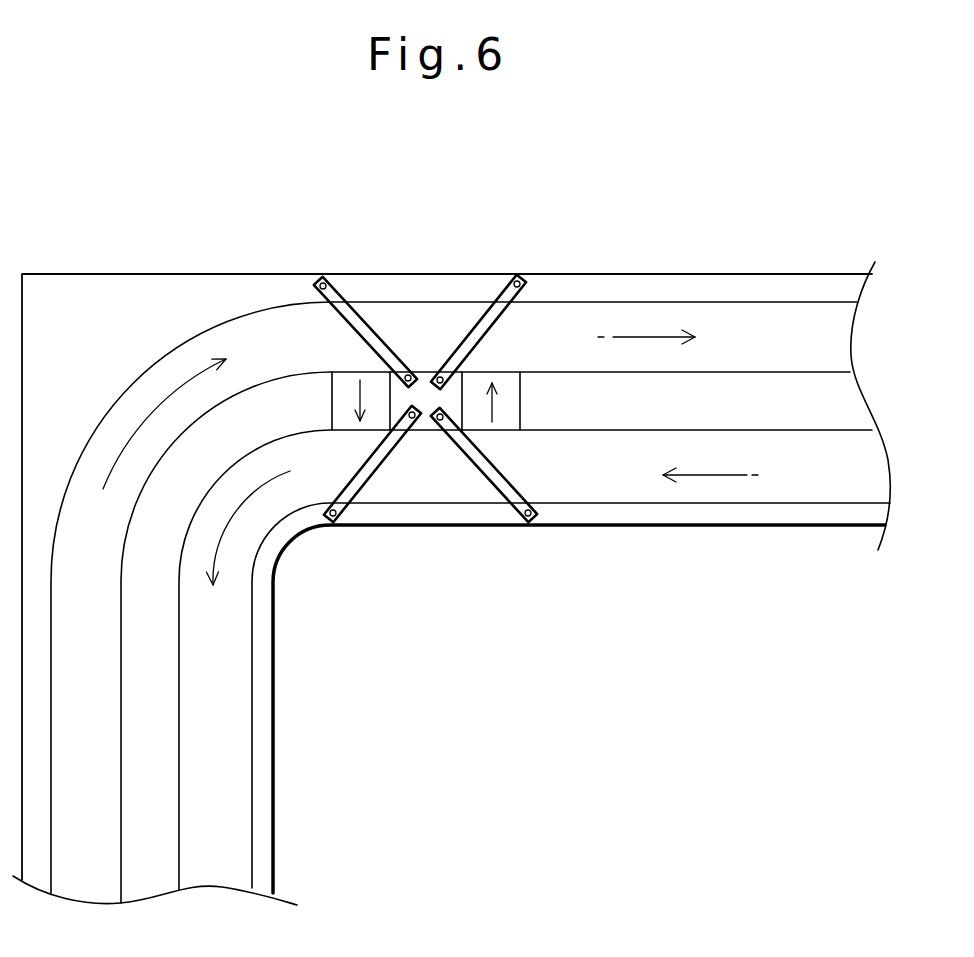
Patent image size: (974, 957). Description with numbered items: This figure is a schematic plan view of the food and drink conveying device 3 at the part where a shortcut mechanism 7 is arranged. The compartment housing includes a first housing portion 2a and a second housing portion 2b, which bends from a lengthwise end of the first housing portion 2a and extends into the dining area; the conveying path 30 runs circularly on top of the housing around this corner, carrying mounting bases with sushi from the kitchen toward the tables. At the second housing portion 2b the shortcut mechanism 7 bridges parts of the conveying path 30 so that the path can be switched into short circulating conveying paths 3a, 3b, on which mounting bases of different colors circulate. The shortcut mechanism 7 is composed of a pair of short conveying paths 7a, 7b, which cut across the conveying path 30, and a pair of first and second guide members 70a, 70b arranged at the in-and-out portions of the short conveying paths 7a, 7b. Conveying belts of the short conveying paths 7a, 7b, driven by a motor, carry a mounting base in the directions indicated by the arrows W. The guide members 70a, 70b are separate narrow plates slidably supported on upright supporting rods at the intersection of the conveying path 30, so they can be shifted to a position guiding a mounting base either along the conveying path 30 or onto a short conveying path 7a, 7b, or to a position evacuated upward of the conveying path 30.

The first housing portion 2a is at (273, 833).
The second housing portion 2b is at (707, 290).
The food and drink conveying device 3 is at (838, 338).
The short circulating conveying path 3a is at (238, 753).
The short circulating conveying path 3b is at (718, 490).
The conveying path 30 is at (885, 477).
The shortcut mechanism 7 is at (439, 409).
The short conveying path 7a is at (345, 380).
The short conveying path 7b is at (507, 385).
The first guide member 70a is at (368, 322).
The second guide member 70b is at (475, 323).
The arrow W is at (358, 402).